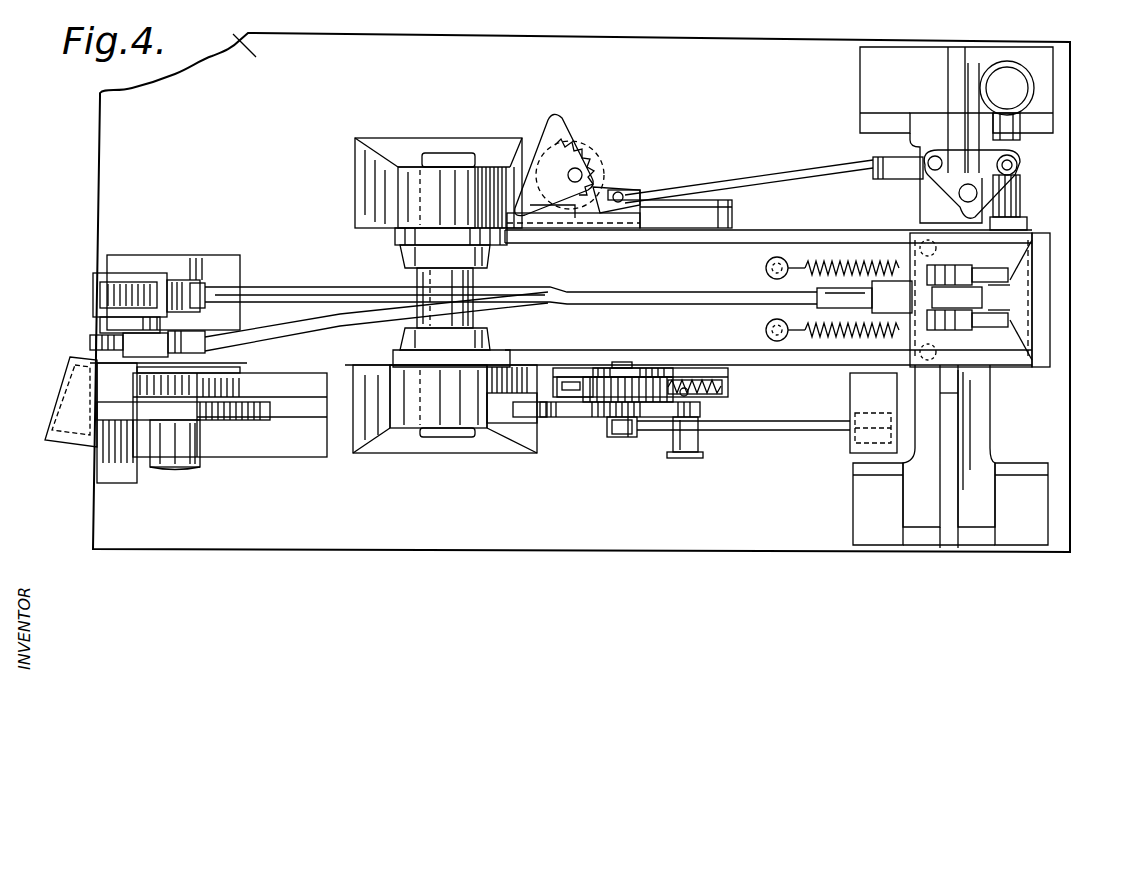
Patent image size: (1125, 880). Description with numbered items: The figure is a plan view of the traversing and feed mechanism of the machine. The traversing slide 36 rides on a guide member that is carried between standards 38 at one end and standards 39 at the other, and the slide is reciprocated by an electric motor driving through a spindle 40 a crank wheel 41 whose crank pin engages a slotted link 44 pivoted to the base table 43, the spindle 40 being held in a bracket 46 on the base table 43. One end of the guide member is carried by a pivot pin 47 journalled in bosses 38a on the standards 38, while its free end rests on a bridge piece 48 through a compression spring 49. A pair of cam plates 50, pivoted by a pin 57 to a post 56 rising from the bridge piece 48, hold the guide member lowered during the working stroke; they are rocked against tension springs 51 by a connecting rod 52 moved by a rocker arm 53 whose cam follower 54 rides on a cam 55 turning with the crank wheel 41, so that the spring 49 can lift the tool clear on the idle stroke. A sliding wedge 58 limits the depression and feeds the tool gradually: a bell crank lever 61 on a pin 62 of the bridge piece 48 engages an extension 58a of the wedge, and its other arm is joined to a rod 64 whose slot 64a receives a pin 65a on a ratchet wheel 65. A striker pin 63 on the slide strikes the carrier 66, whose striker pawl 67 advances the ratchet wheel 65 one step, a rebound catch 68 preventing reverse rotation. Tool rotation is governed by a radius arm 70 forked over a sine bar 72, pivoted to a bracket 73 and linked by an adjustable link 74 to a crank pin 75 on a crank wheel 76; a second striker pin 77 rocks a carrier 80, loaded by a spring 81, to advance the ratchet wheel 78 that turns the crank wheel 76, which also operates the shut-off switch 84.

The traversing slide 36 is at (713, 214).
The standards 38 is at (358, 187).
The bosses 38a is at (405, 178).
The standards 39 is at (875, 82).
The spindle 40 is at (190, 460).
The crank wheel 41 is at (277, 349).
The base table 43 is at (581, 283).
The slotted link 44 is at (112, 290).
The bracket 46 is at (262, 388).
The pivot pin 47 is at (410, 280).
The bridge piece 48 is at (1002, 455).
The compression spring 49 is at (920, 244).
The cam plates 50 is at (995, 330).
The tension springs 51 is at (840, 266).
The connecting rod 52 is at (670, 276).
The rocker arm 53 is at (100, 333).
The cam follower 54 is at (80, 413).
The cam 55 is at (257, 388).
The post 56 is at (1037, 253).
The pin 57 is at (1000, 383).
The sliding wedge 58 is at (977, 477).
The extension 58a is at (1017, 143).
The bell crank lever 61 is at (955, 160).
The pin 62 is at (958, 191).
The striker pin 63 is at (620, 194).
The rod 64 is at (785, 172).
The slot 64a is at (630, 190).
The ratchet wheel 65 is at (598, 183).
The pin 65a is at (548, 213).
The carrier 66 is at (545, 162).
The striker pawl 67 is at (567, 244).
The rebound catch 68 is at (558, 124).
The radius arm 70 is at (700, 443).
The sine bar 72 is at (787, 431).
The bracket 73 is at (867, 400).
The adjustable link 74 is at (638, 433).
The crank pin 75 is at (628, 437).
The crank wheel 76 is at (567, 418).
The second striker pin 77 is at (700, 396).
The ratchet wheel 78 is at (608, 403).
The carrier 80 is at (660, 366).
The spring 81 is at (691, 383).
The shut-off switch 84 is at (507, 412).